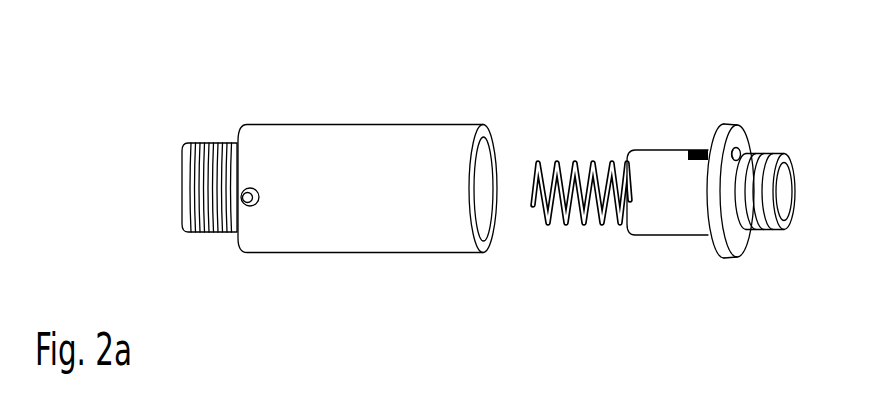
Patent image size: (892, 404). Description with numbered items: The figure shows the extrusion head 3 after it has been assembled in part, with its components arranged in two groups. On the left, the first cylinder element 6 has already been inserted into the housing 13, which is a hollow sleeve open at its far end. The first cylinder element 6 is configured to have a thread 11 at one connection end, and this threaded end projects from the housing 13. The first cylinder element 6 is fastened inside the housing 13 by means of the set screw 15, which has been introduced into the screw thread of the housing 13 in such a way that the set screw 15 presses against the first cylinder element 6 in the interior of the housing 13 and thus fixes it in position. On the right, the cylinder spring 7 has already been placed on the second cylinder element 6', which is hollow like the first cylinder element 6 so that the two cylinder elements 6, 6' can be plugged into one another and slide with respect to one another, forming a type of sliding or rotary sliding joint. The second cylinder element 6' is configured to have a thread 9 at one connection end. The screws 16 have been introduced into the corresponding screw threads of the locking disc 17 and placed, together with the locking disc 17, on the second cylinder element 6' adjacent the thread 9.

The extrusion head 3 is at (463, 68).
The first cylinder element 6 is at (339, 171).
The second cylinder element 6' is at (712, 187).
The cylinder spring 7 is at (575, 158).
The thread 9 is at (780, 155).
The thread 11 is at (213, 143).
The housing 13 is at (320, 122).
The set screw 15 is at (247, 207).
The screws 16 is at (741, 149).
The locking disc 17 is at (720, 260).